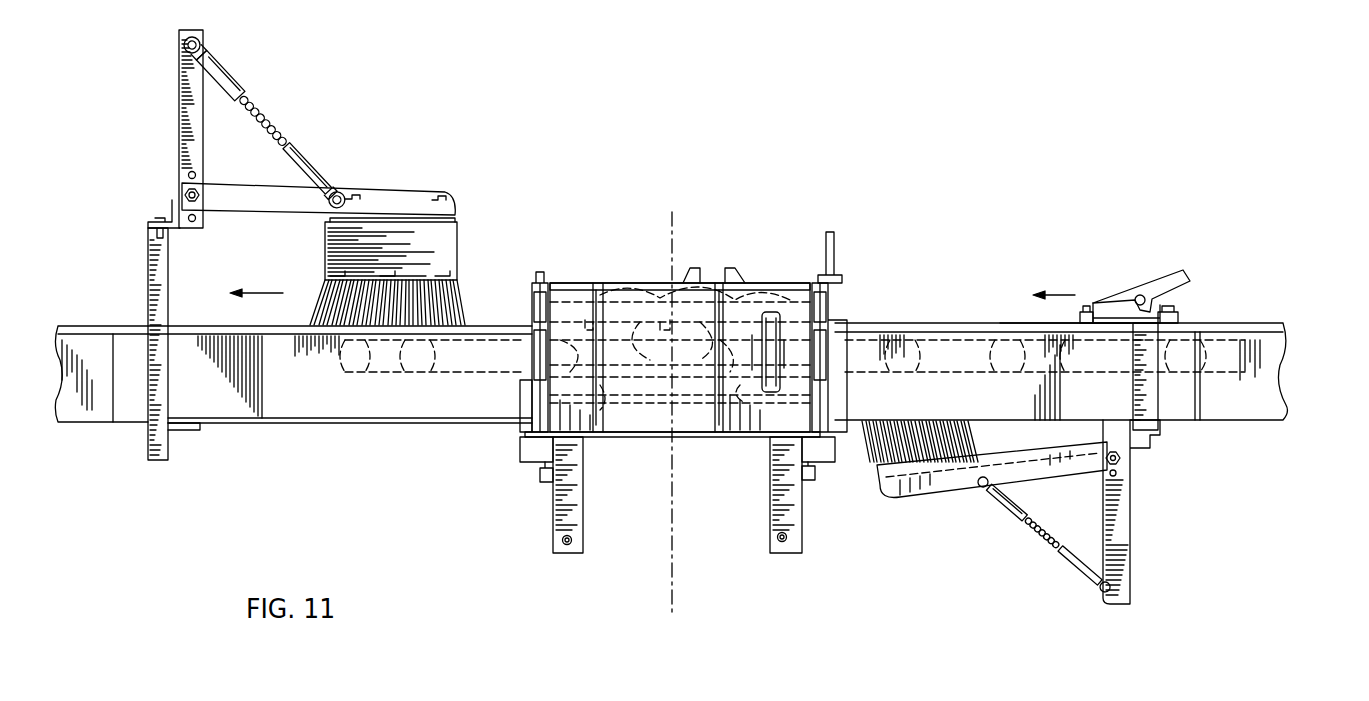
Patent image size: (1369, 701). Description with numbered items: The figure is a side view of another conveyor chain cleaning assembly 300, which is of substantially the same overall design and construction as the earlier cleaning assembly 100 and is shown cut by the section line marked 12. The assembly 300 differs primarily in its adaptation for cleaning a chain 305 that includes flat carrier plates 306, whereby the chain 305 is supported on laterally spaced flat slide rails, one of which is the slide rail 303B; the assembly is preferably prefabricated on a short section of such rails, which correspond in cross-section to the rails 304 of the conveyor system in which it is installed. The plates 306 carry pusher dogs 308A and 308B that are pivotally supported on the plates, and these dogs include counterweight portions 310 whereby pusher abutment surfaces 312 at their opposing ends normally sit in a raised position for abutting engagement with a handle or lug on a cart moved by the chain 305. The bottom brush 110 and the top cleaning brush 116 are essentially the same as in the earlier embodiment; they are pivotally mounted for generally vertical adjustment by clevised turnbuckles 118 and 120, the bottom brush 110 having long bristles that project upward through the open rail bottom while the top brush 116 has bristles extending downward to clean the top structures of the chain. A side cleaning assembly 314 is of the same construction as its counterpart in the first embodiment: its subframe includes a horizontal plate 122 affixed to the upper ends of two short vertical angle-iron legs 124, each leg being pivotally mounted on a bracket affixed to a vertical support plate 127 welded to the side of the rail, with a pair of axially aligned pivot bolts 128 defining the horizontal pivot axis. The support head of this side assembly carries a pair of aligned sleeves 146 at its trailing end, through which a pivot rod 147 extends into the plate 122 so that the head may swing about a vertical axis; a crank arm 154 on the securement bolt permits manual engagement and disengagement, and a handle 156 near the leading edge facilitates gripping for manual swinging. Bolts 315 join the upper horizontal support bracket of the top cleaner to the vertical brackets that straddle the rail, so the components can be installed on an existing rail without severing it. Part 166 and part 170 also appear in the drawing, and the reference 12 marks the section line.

The section line 12- 12 is at (674, 612).
The cleaning assembly 100 is at (787, 382).
The bottom brush 110 is at (965, 437).
The top cleaning brush 116 is at (457, 242).
The clevised turnbuckle 118 is at (1035, 542).
The clevised turnbuckle 120 is at (262, 116).
The horizontal plate 122 is at (640, 438).
The vertical angle-iron legs 124 is at (548, 557).
The vertical support plate 127 is at (522, 390).
The pivot bolts 128 is at (540, 478).
The aligned sleeves 146 is at (532, 305).
The pivot rod 147 is at (546, 283).
The crank arm 154 is at (836, 270).
The handle 156 is at (762, 385).
The inner plate 166 is at (848, 360).
The pivot hole 170 is at (585, 542).
The conveyor chain cleaning assembly 300 is at (1051, 402).
The flat slide rail 303B is at (1252, 323).
The rails 304 is at (85, 425).
The chain 305 is at (1210, 330).
The flat carrier plates 306 is at (1062, 323).
The pusher dog 308A is at (732, 283).
The pusher dog 308B is at (690, 283).
The counterweight portions 310 is at (1102, 302).
The pusher abutment surfaces 312 is at (1186, 280).
The side cleaning assembly 314 is at (588, 283).
The bolts 315 is at (158, 222).